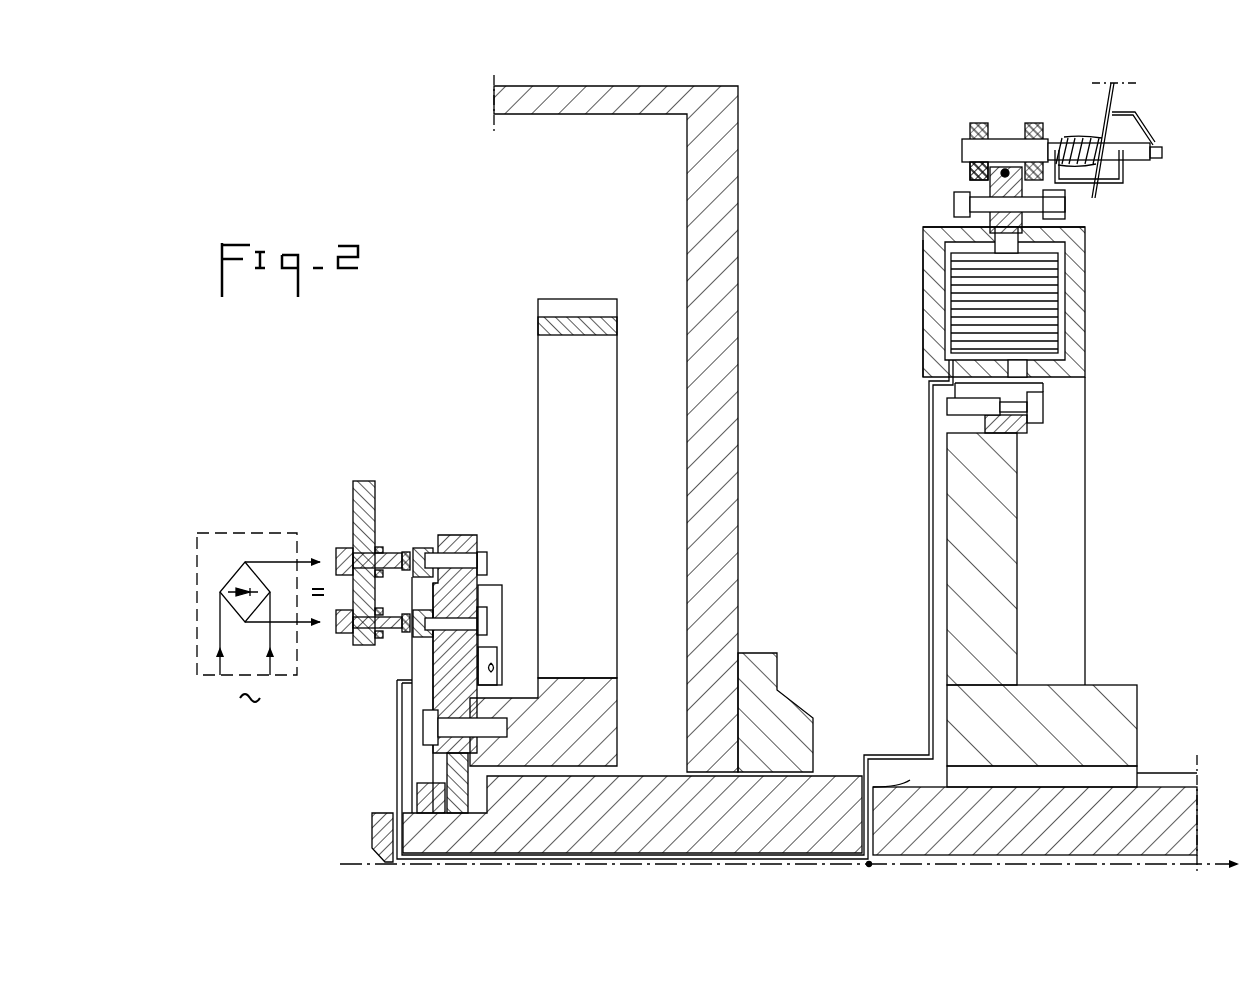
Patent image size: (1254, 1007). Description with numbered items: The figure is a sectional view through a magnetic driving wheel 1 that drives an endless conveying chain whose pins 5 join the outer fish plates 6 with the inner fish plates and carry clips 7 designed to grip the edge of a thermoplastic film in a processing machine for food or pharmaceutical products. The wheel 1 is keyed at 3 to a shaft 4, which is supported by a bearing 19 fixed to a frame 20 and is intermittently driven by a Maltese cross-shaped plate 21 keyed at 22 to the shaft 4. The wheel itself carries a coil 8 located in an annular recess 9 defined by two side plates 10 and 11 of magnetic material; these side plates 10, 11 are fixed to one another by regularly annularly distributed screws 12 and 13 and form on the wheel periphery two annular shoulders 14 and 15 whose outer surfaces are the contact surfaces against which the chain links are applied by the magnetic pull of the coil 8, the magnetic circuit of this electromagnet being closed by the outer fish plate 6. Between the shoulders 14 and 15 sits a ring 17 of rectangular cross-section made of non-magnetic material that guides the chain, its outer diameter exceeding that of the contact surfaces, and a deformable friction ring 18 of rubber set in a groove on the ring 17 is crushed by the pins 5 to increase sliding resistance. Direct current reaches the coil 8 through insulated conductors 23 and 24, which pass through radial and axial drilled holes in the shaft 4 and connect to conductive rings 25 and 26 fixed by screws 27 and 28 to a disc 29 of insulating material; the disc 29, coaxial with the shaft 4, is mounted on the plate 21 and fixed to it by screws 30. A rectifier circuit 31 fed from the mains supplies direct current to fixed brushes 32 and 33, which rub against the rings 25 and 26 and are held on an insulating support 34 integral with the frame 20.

The driving wheel 1 is at (990, 565).
The key 3 is at (1112, 778).
The shaft 4 is at (1178, 818).
The pins 5 is at (1005, 140).
The outer fish plates 6 is at (975, 122).
The clips 7 is at (1157, 132).
The coil 8 is at (1040, 292).
The annular recess 9 is at (1045, 248).
The side plate 10 is at (1086, 325).
The side plate 11 is at (935, 298).
The screws 12 is at (955, 205).
The screws 13 is at (1045, 410).
The annular shoulder 14 is at (1060, 198).
The annular shoulder 15 is at (990, 188).
The ring 17 is at (958, 238).
The friction ring 18 is at (968, 168).
The bearing 19 is at (765, 680).
The frame 20 is at (739, 455).
The Maltese cross-shaped plate 21 is at (600, 482).
The key 22 is at (600, 768).
The insulated conductor 23 is at (503, 585).
The insulated conductor 24 is at (493, 668).
The conductive ring 25 is at (423, 548).
The conductive ring 26 is at (423, 640).
The screws 27 is at (485, 553).
The screws 28 is at (487, 620).
The disc 29 is at (455, 535).
The screws 30 is at (423, 728).
The rectifier circuit 31 is at (262, 530).
The fixed brush 32 is at (405, 550).
The fixed brush 33 is at (404, 635).
The support 34 is at (364, 481).